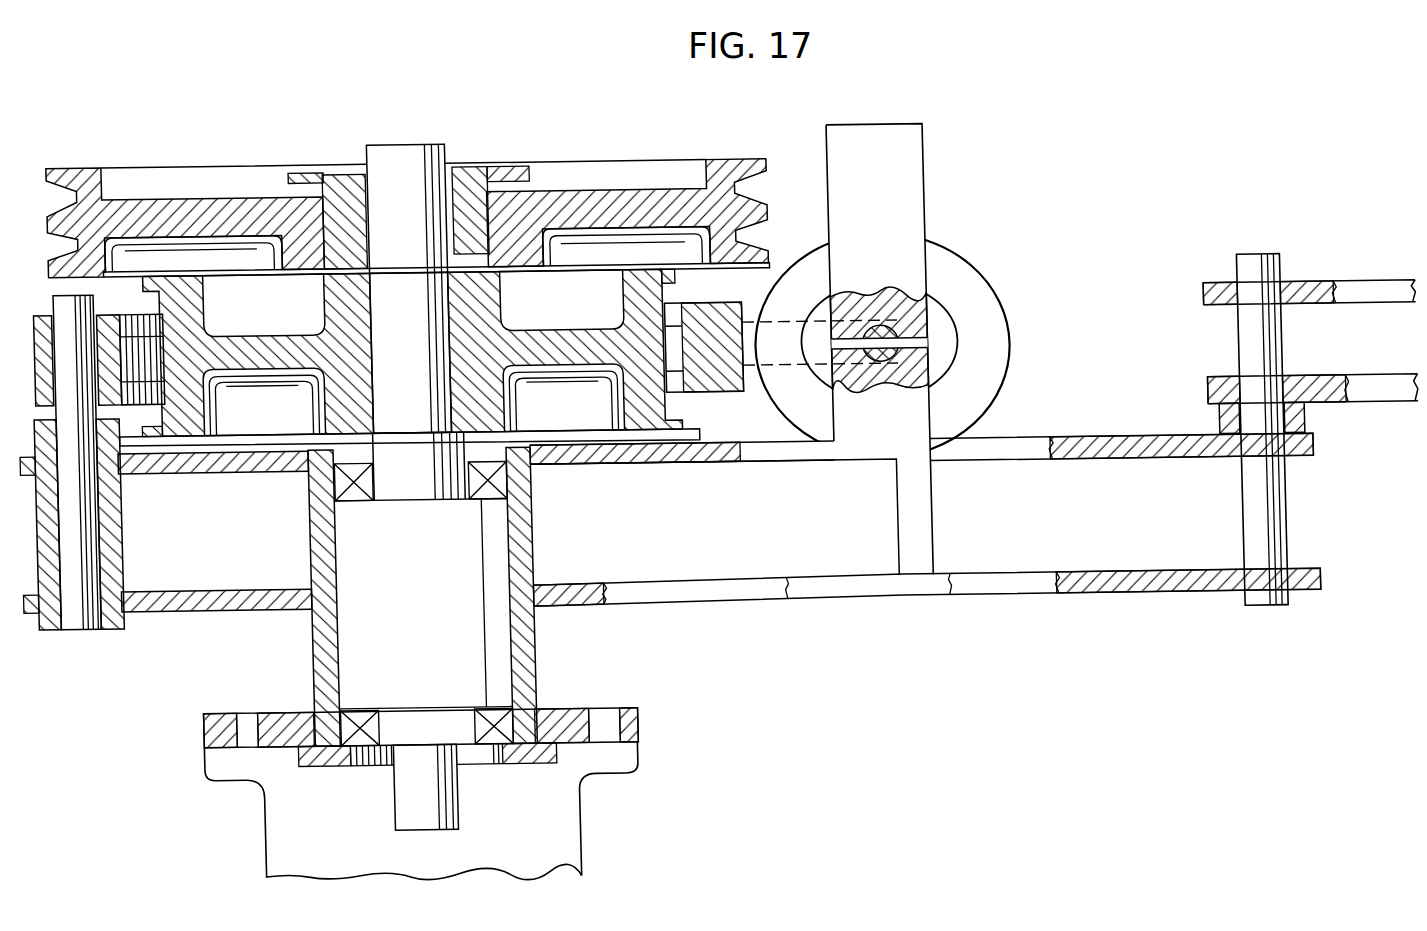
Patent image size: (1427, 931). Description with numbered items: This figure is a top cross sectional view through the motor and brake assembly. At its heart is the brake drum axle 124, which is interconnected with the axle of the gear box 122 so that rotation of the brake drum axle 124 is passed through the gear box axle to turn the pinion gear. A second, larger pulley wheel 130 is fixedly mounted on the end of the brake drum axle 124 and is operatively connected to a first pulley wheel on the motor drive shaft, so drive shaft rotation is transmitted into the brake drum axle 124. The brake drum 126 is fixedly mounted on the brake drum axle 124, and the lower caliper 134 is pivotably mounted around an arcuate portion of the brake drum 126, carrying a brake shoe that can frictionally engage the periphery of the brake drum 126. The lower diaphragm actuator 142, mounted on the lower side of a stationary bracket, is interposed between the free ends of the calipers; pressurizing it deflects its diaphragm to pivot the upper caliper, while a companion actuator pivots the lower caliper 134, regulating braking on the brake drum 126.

The gear box 122 is at (535, 835).
The brake drum axle 124 is at (439, 341).
The brake drum 126 is at (651, 444).
The second pulley wheel 130 is at (659, 171).
The lower caliper 134 is at (133, 313).
The lower diaphragm actuator 142 is at (993, 318).